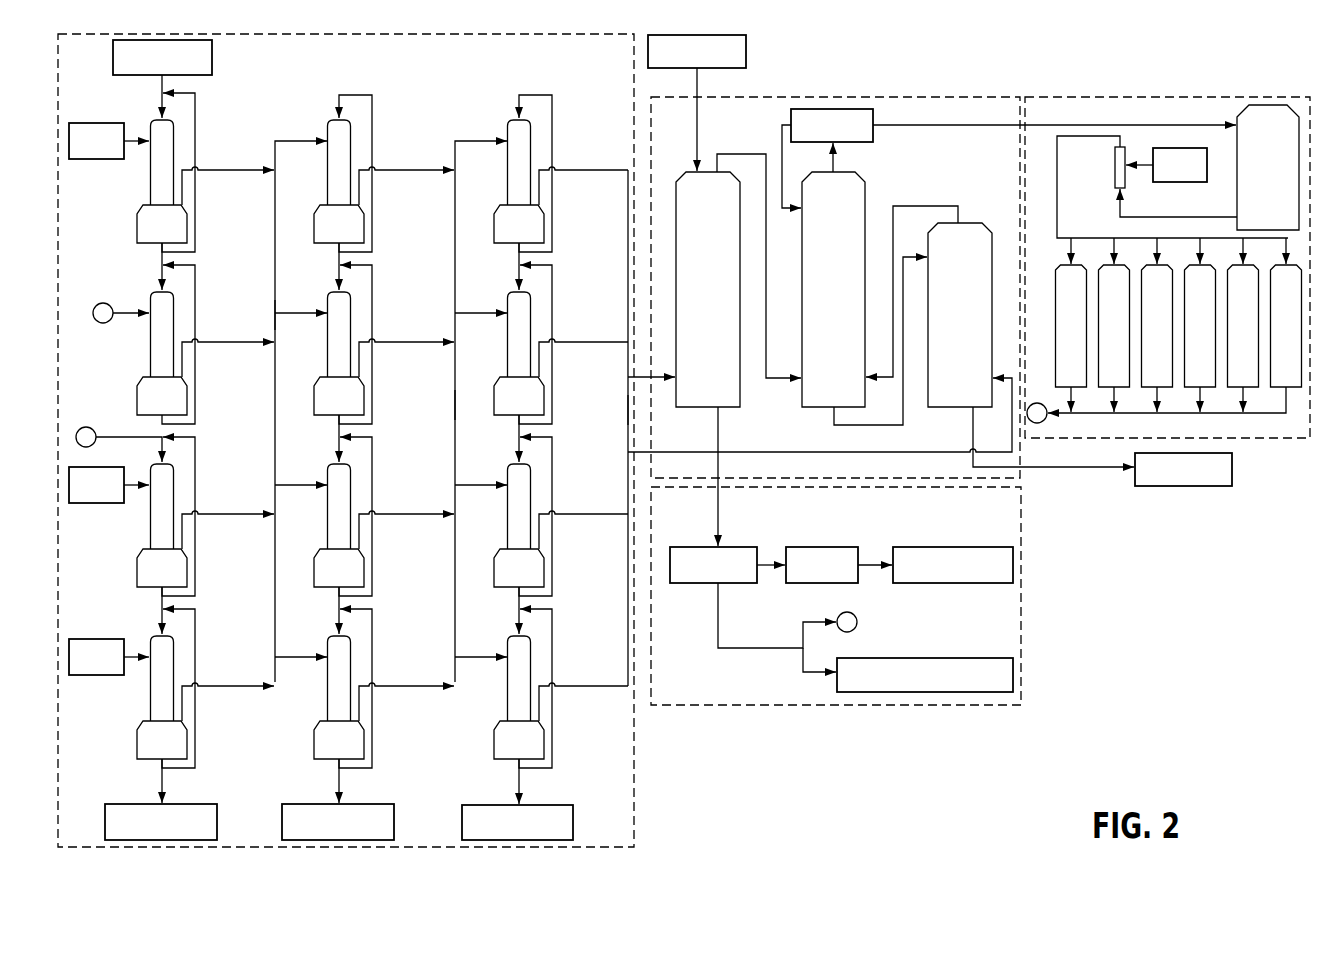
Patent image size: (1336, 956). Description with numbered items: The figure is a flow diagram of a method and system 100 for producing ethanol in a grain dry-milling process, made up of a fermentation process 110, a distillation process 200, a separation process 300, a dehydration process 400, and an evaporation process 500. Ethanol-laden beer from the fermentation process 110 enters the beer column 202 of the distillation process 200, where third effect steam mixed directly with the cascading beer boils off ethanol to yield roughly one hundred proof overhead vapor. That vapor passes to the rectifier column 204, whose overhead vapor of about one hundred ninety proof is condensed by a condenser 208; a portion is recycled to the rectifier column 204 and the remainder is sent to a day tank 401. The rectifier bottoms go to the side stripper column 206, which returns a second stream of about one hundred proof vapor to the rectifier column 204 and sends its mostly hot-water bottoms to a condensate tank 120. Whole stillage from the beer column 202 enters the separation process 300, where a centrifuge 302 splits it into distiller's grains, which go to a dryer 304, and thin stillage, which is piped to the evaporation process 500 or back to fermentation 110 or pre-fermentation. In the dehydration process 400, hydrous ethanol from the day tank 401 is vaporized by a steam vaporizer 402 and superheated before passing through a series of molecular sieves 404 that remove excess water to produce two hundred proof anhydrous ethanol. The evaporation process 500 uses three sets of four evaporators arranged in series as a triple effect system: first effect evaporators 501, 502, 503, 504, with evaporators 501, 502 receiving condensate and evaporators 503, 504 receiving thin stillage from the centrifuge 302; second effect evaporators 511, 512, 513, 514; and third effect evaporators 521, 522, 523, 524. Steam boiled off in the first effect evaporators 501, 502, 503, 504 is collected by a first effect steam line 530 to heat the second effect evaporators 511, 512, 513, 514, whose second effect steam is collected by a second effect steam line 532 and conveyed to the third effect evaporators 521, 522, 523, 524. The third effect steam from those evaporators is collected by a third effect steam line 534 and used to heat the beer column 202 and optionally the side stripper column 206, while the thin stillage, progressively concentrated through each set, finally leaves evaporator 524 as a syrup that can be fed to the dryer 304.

The method and system 100 is at (684, 440).
The fermentation process 110 is at (746, 40).
The condensate tank 120 is at (1232, 480).
The distillation process 200 is at (932, 300).
The beer column 202 is at (692, 408).
The rectifier column 204 is at (810, 408).
The side stripper column 206 is at (940, 408).
The condenser 208 is at (874, 136).
The separation process 300 is at (836, 619).
The centrifuge 302 is at (748, 547).
The dryer 304 is at (850, 547).
The dehydration process 400 is at (1167, 246).
The 190 day tank 401 is at (1237, 205).
The steam vaporizer 402 is at (1113, 180).
The molecular sieves 404 is at (1047, 262).
The evaporation process 500 is at (375, 440).
The first effect evaporator 501 is at (137, 208).
The first effect evaporator 502 is at (137, 380).
The first effect evaporator 503 is at (137, 552).
The first effect evaporator 504 is at (137, 724).
The second effect evaporator 511 is at (328, 130).
The second effect evaporator 512 is at (328, 302).
The second effect evaporator 513 is at (328, 474).
The second effect evaporator 514 is at (314, 723).
The third effect evaporator 521 is at (508, 130).
The third effect evaporator 522 is at (508, 302).
The third effect evaporator 523 is at (508, 474).
The third effect evaporator 524 is at (494, 723).
The first effect steam line 530 is at (275, 420).
The second effect steam line 532 is at (455, 406).
The third effect steam line 534 is at (628, 409).